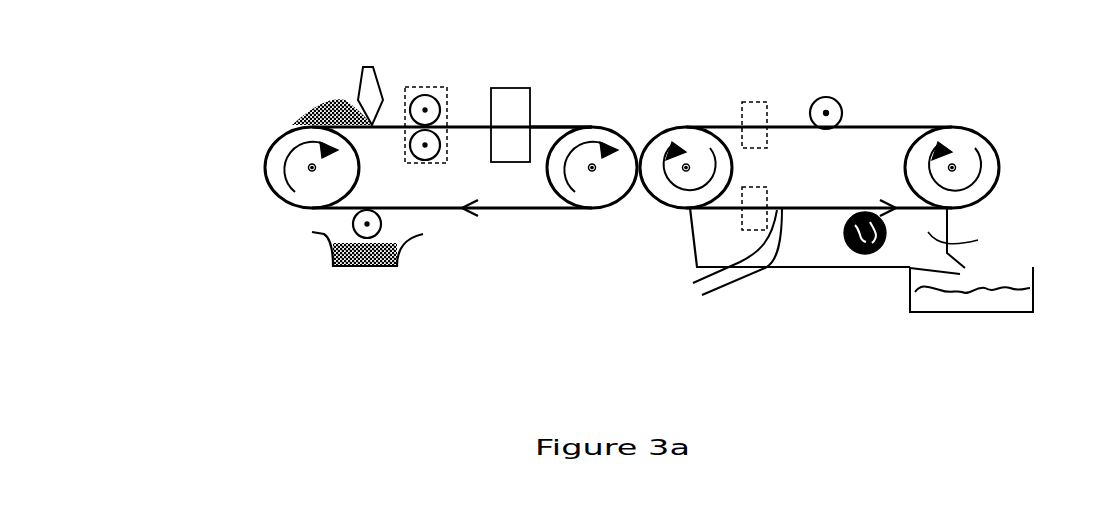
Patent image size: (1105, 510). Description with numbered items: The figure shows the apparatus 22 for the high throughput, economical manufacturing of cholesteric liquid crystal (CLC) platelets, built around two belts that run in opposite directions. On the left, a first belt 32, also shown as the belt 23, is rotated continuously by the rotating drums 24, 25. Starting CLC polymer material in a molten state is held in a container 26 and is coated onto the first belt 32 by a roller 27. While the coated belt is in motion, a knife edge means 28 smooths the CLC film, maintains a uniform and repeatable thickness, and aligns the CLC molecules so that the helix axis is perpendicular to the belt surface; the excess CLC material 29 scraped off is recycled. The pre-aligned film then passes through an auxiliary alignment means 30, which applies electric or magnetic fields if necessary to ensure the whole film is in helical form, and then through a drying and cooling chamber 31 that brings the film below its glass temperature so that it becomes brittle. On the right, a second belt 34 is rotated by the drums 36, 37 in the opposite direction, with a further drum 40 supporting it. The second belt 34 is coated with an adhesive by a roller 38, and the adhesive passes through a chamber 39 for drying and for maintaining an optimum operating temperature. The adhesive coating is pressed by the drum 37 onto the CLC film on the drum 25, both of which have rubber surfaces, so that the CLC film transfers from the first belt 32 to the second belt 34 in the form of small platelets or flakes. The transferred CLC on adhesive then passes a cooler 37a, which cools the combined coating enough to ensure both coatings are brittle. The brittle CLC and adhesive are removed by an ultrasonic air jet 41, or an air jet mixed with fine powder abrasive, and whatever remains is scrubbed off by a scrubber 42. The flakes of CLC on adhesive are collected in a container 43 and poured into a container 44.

The apparatus 22 is at (522, 300).
The belt 23 is at (513, 213).
The rotating drum 24 is at (263, 136).
The rotating drum 25 is at (566, 208).
The container 26 is at (331, 275).
The roller 27 is at (312, 232).
The knife edge means 28 is at (357, 63).
The excess CLC material 29 is at (310, 112).
The auxiliary alignment means 30 is at (440, 88).
The drying and cooling chamber 31 is at (507, 86).
The first belt 32 is at (553, 130).
The second belt 34 is at (815, 212).
The drum 36 is at (988, 134).
The drum 37 is at (657, 203).
The cooler 37a is at (742, 227).
The roller 38 is at (833, 94).
The chamber 39 is at (747, 97).
The roller 40 is at (686, 126).
The ultrasonic air jet 41 is at (720, 290).
The scrubber 42 is at (858, 254).
The container 43 is at (970, 238).
The container 44 is at (965, 298).